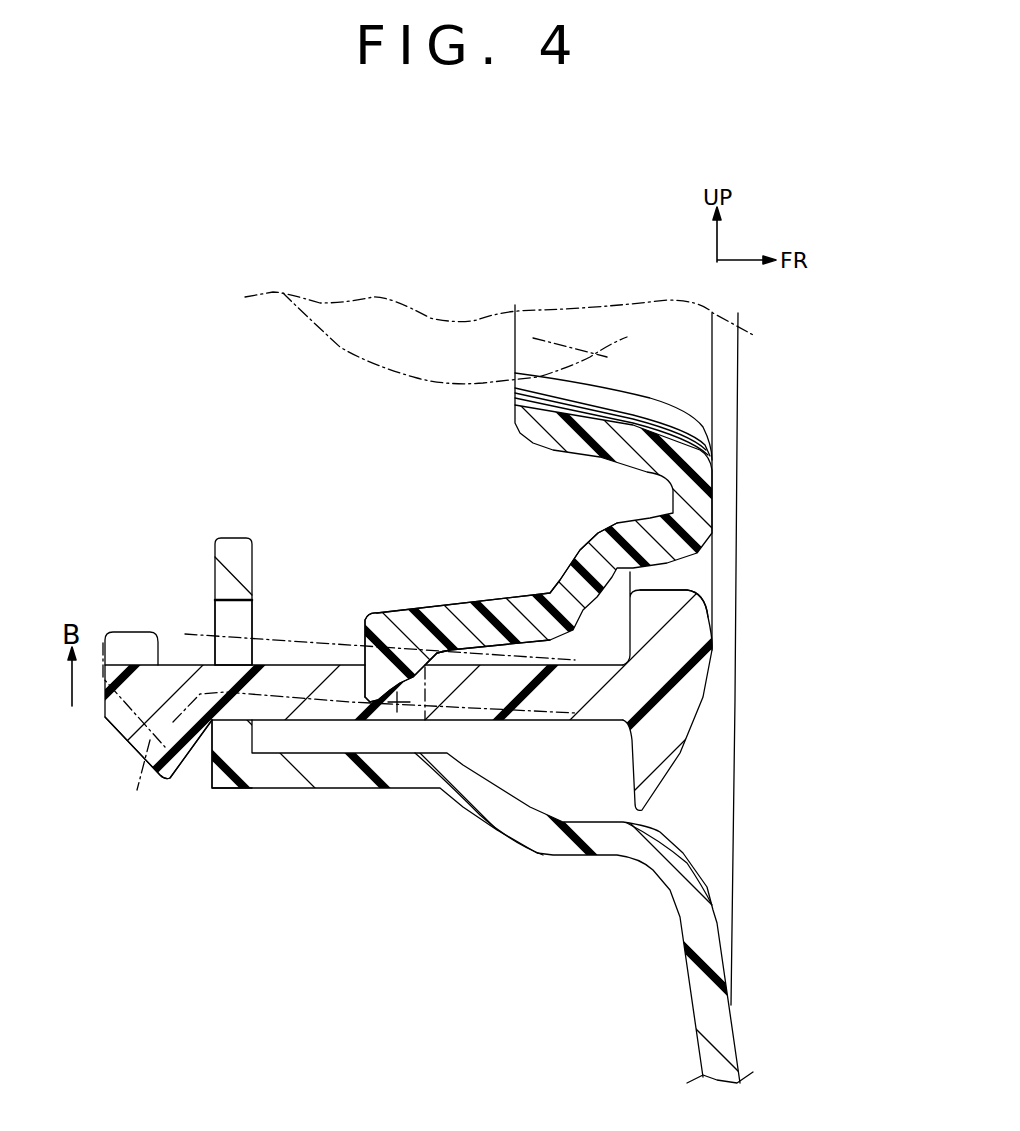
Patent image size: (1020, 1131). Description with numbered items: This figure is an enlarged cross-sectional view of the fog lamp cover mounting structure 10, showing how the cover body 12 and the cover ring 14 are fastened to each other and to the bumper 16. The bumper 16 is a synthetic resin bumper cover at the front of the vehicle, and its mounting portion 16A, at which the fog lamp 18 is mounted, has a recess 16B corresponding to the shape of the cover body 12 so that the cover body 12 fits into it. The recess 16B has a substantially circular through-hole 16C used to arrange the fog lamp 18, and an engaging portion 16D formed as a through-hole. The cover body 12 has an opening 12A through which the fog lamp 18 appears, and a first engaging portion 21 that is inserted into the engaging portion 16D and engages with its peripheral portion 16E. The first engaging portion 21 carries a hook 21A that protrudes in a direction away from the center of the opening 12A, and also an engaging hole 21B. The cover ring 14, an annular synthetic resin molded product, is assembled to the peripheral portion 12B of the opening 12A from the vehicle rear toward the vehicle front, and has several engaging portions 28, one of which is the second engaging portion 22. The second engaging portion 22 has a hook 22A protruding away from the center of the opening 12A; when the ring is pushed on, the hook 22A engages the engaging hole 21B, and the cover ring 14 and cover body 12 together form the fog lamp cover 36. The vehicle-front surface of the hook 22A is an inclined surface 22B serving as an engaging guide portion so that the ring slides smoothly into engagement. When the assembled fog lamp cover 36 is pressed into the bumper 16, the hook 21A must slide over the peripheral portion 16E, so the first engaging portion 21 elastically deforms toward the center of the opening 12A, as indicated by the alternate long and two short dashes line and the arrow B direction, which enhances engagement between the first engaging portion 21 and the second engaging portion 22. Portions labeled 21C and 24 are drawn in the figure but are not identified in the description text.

The fog lamp cover mounting structure 10 is at (589, 280).
The cover body 12 is at (718, 667).
The opening 12A is at (698, 367).
The peripheral portion 12B is at (670, 593).
The cover ring 14 is at (718, 471).
The bumper 16 is at (738, 1004).
The mounting portion 16A is at (693, 818).
The recess 16B is at (253, 552).
The through-hole 16C is at (230, 432).
The engaging portion 16D is at (223, 615).
The peripheral portion 16E is at (228, 723).
The fog lamp 18 is at (627, 337).
The first engaging portion 21 is at (317, 660).
The hook 21A is at (190, 768).
The engaging hole 21B is at (413, 710).
The bolt flange 21C is at (183, 633).
The second engaging portion 22 is at (497, 592).
The hook 22A is at (367, 721).
The inclined surface 22B is at (417, 680).
The fastening member 24 is at (290, 633).
The engaging portions 28 is at (497, 592).
The fog lamp cover 36 is at (757, 544).